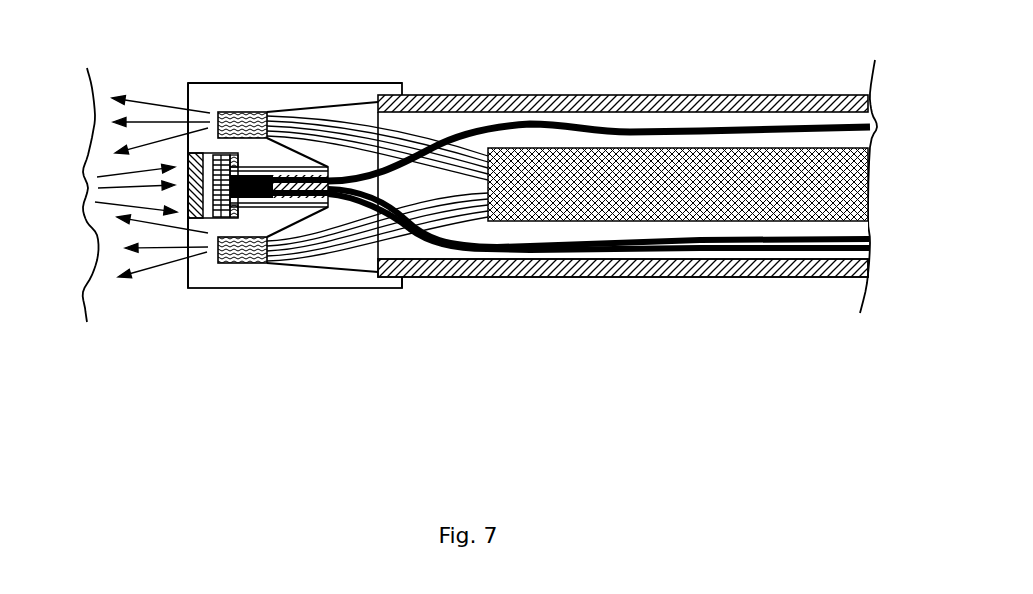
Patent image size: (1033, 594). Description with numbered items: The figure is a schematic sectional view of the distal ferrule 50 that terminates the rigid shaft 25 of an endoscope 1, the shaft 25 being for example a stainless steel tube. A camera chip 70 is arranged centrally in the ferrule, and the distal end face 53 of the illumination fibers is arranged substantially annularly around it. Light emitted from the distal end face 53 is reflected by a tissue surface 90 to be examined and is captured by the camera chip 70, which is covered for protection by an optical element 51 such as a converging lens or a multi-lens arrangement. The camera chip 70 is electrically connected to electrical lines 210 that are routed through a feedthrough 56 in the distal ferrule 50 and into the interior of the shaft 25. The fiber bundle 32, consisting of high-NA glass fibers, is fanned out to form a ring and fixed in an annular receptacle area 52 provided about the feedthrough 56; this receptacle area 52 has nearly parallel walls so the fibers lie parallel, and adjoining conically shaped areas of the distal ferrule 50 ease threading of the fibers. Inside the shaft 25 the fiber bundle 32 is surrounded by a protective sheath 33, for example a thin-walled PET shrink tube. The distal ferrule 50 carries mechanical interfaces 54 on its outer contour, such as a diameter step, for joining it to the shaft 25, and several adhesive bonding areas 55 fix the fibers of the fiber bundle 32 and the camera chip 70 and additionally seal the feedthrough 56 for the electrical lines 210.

The endoscope 1 is at (855, 160).
The rigid shaft 25 is at (678, 277).
The fiber bundle 32 is at (400, 147).
The protective sheath 33 is at (603, 153).
The distal ferrule 50 is at (367, 288).
The optical element 51 is at (196, 218).
The receptacle area 52 is at (240, 112).
The distal end face 53 is at (189, 116).
The mechanical interfaces 54 is at (350, 83).
The adhesive bonding areas 55 is at (236, 166).
The feedthrough 56 is at (323, 207).
The camera chip 70 is at (221, 218).
The tissue surface 90 is at (94, 270).
The electrical lines 210 is at (545, 122).